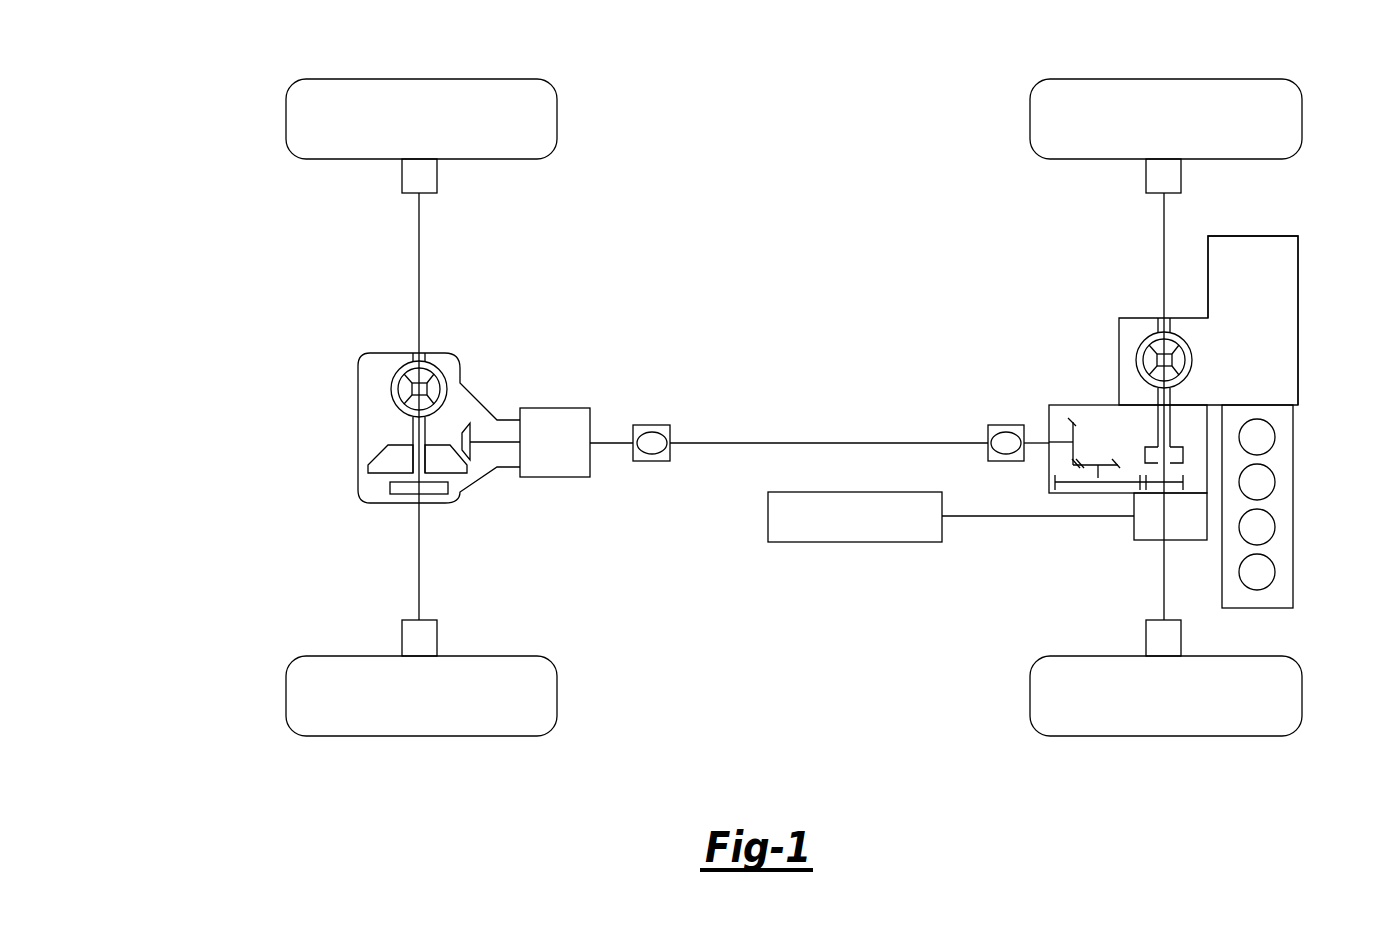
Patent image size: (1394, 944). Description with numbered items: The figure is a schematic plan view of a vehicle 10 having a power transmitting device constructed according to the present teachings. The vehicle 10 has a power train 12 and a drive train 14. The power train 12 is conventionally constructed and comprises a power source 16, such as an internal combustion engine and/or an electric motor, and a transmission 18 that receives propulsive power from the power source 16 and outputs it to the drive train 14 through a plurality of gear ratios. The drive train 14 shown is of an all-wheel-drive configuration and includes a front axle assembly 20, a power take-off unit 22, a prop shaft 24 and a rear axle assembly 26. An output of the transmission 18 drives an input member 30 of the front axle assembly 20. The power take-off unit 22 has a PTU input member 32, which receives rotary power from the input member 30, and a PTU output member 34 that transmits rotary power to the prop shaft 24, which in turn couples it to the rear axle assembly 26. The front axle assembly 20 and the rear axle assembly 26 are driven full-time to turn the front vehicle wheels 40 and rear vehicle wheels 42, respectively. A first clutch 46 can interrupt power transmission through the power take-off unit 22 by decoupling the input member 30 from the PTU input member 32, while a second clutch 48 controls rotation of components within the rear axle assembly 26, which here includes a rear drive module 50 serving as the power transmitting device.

The vehicle 10 is at (228, 781).
The power train 12 is at (1322, 507).
The drive train 14 is at (820, 380).
The power source 16 is at (1285, 602).
The transmission 18 is at (1288, 252).
The front axle assembly 20 is at (1111, 290).
The power take-off unit 22 is at (1054, 368).
The prop shaft 24 is at (718, 443).
The rear axle assembly 26 is at (328, 345).
The input member 30 is at (1192, 365).
The PTU input member 32 is at (1153, 482).
The PTU output member 34 is at (1034, 443).
The front vehicle wheels 40 is at (1030, 120).
The rear vehicle wheels 42 is at (286, 118).
The first clutch 46 is at (1183, 455).
The second clutch 48 is at (400, 494).
The rear drive module 50 is at (363, 429).